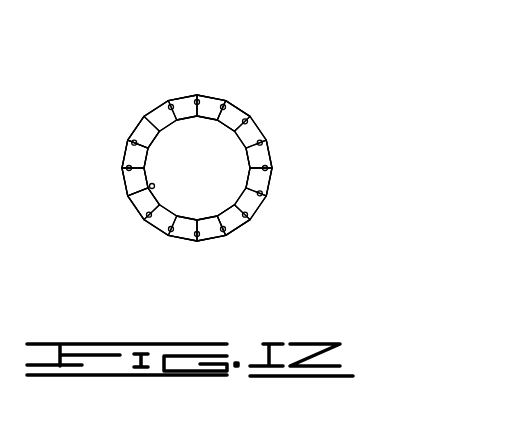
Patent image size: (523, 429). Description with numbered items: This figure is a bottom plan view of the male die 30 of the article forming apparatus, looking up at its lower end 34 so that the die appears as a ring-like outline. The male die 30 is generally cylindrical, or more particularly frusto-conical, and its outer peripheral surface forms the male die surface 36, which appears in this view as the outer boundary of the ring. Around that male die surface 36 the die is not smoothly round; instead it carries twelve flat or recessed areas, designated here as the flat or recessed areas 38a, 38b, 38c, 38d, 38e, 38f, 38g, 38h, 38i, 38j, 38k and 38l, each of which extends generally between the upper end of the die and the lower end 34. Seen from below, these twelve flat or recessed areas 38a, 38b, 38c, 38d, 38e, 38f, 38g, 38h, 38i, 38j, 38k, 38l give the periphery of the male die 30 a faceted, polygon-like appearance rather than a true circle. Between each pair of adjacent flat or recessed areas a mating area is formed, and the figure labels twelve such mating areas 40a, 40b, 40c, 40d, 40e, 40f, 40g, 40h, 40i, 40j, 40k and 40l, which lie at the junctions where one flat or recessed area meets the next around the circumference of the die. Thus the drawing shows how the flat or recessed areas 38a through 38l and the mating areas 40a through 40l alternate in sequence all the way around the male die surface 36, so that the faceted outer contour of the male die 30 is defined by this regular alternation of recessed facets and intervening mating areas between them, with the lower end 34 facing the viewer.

The male die 30 is at (254, 110).
The lower end 34 is at (246, 150).
The male die surface 36 is at (262, 190).
The flat or recessed area 38a is at (228, 100).
The flat or recessed area 38b is at (243, 105).
The flat or recessed area 38c is at (262, 148).
The flat or recessed area 38d is at (262, 203).
The flat or recessed area 38e is at (240, 222).
The flat or recessed area 38f is at (212, 232).
The flat or recessed area 38g is at (170, 241).
The flat or recessed area 38h is at (145, 216).
The flat or recessed area 38i is at (127, 196).
The flat or recessed area 38j is at (124, 151).
The flat or recessed area 38k is at (140, 118).
The flat or recessed area 38l is at (175, 100).
The mating area 40a is at (208, 97).
The mating area 40b is at (232, 103).
The mating area 40c is at (260, 133).
The mating area 40d is at (261, 170).
The mating area 40e is at (253, 212).
The mating area 40f is at (227, 237).
The mating area 40g is at (200, 242).
The mating area 40h is at (147, 228).
The mating area 40i is at (152, 190).
The mating area 40j is at (122, 170).
The mating area 40k is at (132, 131).
The mating area 40l is at (158, 101).